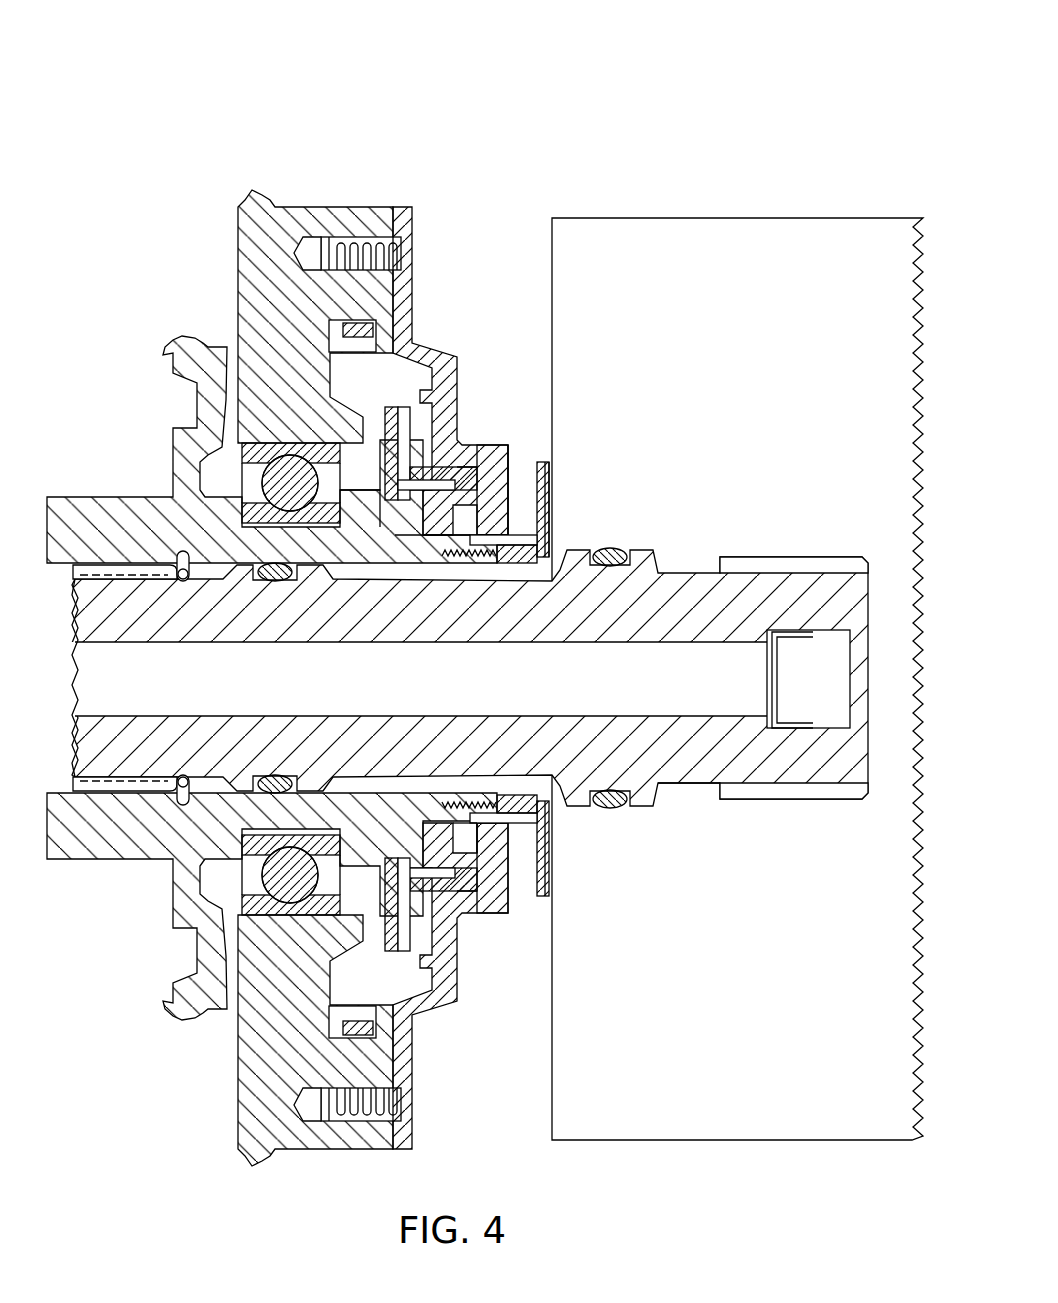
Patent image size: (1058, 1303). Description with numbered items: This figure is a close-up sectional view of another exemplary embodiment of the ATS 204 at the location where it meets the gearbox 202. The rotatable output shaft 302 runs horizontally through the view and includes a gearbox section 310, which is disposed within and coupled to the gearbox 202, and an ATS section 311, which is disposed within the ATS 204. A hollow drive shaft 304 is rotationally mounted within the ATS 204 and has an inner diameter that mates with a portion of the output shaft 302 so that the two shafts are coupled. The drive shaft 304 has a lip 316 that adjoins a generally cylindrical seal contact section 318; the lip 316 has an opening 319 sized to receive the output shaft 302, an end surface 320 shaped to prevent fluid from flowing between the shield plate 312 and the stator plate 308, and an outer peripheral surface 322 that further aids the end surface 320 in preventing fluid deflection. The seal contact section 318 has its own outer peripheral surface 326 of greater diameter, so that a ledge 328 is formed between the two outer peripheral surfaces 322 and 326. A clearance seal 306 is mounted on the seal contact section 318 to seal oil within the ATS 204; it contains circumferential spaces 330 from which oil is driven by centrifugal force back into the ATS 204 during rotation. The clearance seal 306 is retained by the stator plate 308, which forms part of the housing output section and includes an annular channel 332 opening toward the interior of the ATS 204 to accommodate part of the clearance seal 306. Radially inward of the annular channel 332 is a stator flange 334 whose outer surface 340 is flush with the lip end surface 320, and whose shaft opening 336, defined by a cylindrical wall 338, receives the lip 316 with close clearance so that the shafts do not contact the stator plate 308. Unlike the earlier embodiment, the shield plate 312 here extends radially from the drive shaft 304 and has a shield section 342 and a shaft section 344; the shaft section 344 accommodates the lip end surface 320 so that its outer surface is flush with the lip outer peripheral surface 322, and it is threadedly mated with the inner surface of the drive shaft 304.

The gearbox 202 is at (740, 238).
The ATS 204 is at (167, 150).
The output shaft 302 is at (693, 575).
The drive shaft 304 is at (91, 496).
The clearance seal 306 is at (440, 420).
The stator plate 308 is at (422, 350).
The gearbox section 310 is at (688, 797).
The ATS section 311 is at (385, 765).
The shield plate 312 is at (548, 478).
The lip 316 is at (490, 566).
The seal contact section 318 is at (377, 550).
The opening 319 is at (512, 568).
The end surface 320 is at (520, 560).
The outer peripheral surface 322 is at (492, 818).
The outer peripheral surface 326 is at (465, 827).
The ledge 328 is at (475, 827).
The spaces 330 is at (428, 890).
The annular channel 332 is at (492, 445).
The stator flange 334 is at (503, 475).
The shaft opening 336 is at (515, 541).
The cylindrical wall 338 is at (502, 818).
The outer surface 340 is at (512, 513).
The shield section 342 is at (550, 500).
The shaft section 344 is at (579, 565).